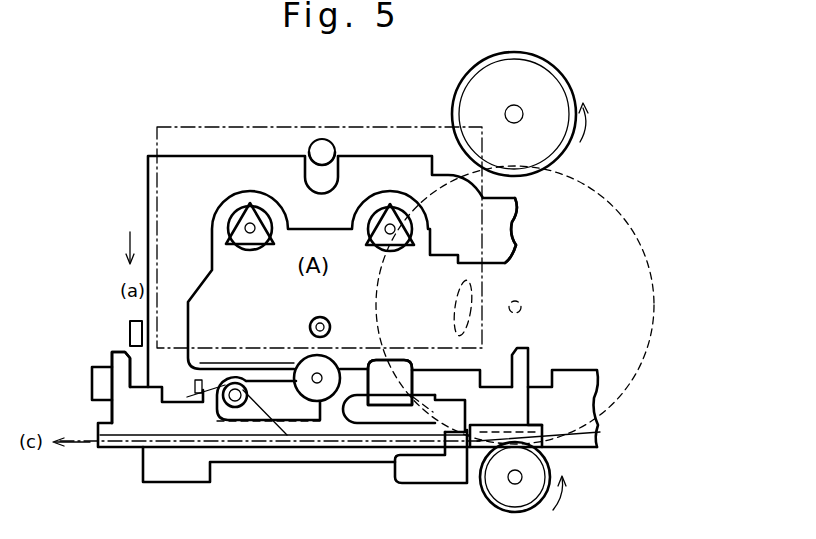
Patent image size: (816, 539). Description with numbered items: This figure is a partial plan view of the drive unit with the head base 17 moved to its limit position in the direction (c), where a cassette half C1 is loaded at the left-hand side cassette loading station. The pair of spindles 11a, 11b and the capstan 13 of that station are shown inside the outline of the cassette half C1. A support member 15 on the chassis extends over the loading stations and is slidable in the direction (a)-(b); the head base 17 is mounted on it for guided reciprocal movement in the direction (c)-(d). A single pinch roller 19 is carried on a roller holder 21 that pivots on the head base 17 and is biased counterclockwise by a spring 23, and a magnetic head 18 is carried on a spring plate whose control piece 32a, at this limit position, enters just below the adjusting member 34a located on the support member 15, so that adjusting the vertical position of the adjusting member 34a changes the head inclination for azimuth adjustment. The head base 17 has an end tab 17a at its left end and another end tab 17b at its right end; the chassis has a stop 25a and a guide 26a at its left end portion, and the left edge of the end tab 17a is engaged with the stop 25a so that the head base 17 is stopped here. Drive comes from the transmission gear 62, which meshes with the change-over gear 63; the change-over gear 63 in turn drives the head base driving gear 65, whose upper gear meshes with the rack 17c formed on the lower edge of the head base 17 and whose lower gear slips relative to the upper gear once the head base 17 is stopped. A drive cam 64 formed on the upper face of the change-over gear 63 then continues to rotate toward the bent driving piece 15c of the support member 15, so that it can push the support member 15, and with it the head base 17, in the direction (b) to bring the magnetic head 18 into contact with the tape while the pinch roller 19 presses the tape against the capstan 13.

The cassette half C1 is at (285, 125).
The support member 15 is at (180, 167).
The spindle 11a is at (237, 220).
The spindle 11b is at (402, 220).
The capstan 13 is at (312, 325).
The bent driving piece 15c is at (500, 250).
The transmission gear 62 is at (550, 86).
The change-over gear 63 is at (646, 245).
The drive cam 64 is at (455, 305).
The head base 17 is at (120, 430).
The end tab 17a is at (113, 357).
The end tab 17b is at (525, 356).
The rack 17c is at (168, 449).
The stop 25a is at (103, 390).
The guide 26a is at (130, 333).
The control piece 32a is at (462, 416).
The adjusting member 34a is at (425, 472).
The roller holder 21 is at (297, 407).
The spring 23 is at (257, 405).
The pinch roller 19 is at (325, 392).
The magnetic head 18 is at (387, 400).
The head base driving gear 65 is at (498, 512).